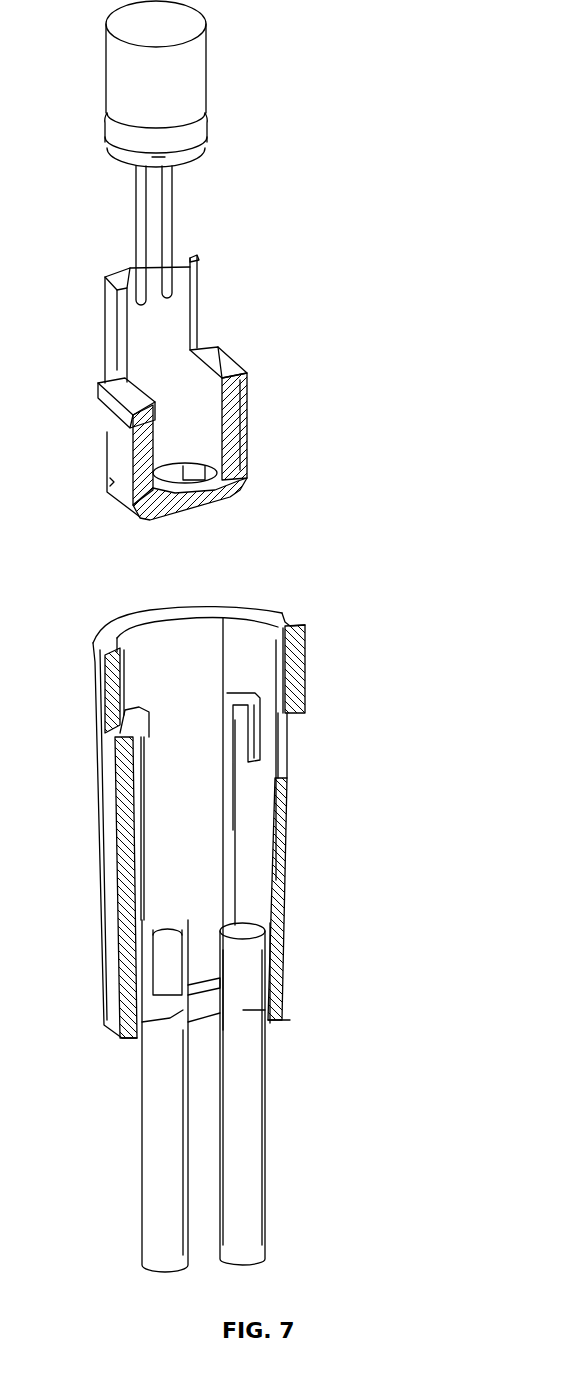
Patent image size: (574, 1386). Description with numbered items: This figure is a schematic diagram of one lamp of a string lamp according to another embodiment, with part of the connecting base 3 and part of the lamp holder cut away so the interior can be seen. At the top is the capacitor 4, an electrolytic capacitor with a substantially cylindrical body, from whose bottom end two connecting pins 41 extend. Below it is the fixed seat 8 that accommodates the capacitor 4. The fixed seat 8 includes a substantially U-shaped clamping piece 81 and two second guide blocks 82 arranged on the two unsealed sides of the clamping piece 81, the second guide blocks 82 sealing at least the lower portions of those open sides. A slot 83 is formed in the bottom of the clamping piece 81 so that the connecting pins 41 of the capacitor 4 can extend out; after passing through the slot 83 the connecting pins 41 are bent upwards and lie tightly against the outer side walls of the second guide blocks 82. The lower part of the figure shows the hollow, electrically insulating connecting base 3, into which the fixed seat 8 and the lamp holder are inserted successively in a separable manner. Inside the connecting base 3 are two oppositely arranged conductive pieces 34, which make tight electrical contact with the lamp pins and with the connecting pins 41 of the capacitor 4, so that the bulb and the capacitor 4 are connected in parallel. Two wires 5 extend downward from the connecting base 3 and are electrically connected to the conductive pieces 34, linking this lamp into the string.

The capacitor 4 is at (188, 87).
The connecting pins 41 is at (173, 210).
The fixed seat 8 is at (253, 397).
The U-shaped clamping piece 81 is at (173, 324).
The second guide blocks 82 is at (243, 368).
The slot 83 is at (204, 501).
The connecting base 3 is at (256, 798).
The conductive pieces 34 is at (263, 747).
The wires 5 is at (235, 1143).